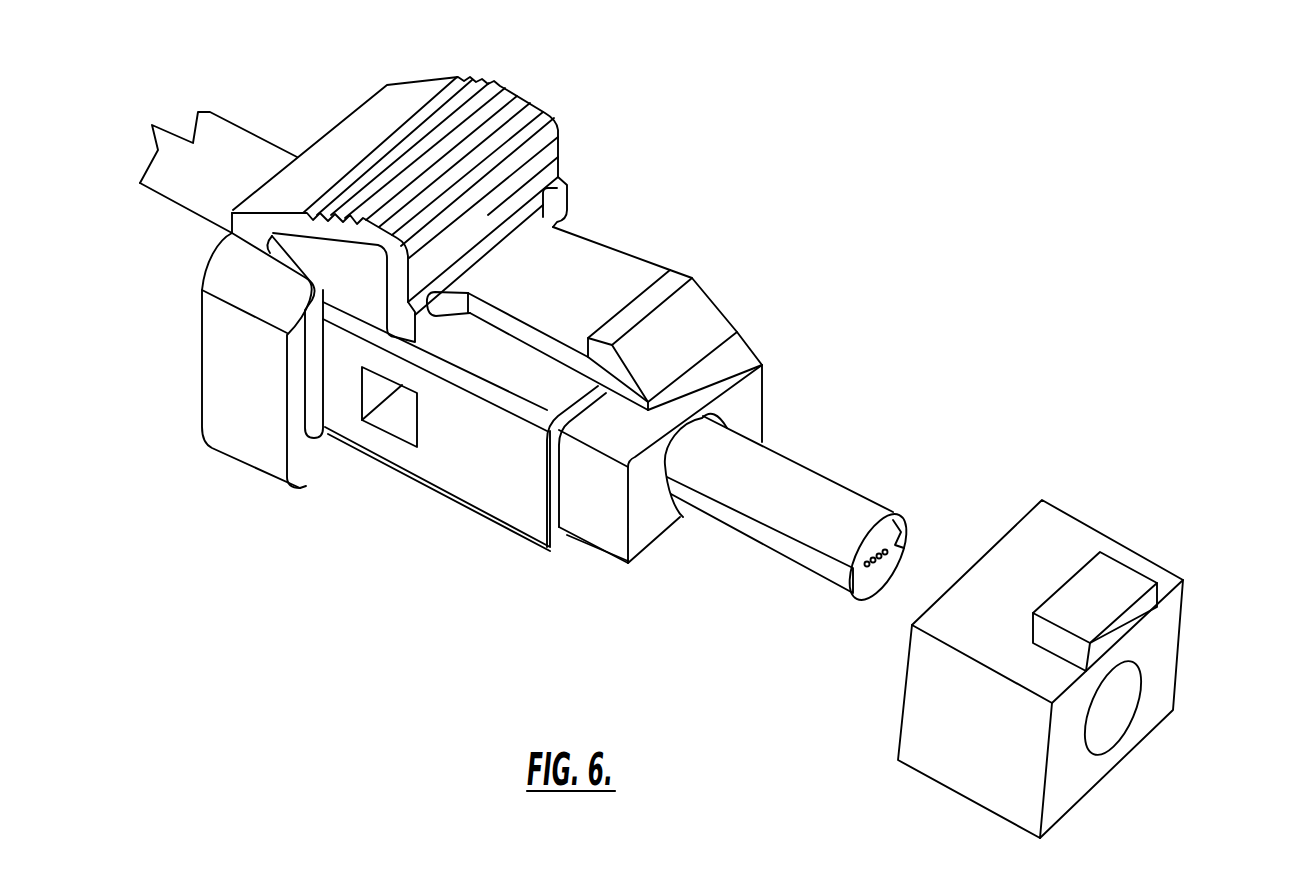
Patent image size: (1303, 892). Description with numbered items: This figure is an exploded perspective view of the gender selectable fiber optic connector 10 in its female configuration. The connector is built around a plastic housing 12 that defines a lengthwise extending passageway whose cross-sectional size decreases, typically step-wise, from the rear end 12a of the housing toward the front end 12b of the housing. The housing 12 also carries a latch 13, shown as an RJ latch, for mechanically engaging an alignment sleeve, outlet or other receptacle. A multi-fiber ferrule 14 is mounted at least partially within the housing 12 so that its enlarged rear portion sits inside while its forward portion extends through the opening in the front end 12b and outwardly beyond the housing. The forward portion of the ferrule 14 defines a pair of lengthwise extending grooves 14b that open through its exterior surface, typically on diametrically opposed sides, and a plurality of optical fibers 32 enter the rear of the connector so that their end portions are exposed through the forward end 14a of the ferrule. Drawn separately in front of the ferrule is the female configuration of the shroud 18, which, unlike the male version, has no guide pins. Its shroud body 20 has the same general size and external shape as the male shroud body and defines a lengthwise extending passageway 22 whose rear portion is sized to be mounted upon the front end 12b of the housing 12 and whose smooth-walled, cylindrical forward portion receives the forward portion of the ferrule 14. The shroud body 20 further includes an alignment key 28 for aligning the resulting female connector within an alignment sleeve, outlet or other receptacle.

The gender selectable fiber optic connector 10 is at (828, 184).
The housing 12 is at (445, 472).
The rear end of the housing 12a is at (202, 360).
The front end of the housing 12b is at (645, 530).
The latch 13 is at (675, 307).
The ferrule 14 is at (777, 487).
The forward end of the ferrule 14a is at (887, 535).
The lengthwise extending grooves 14b is at (810, 560).
The shroud 18 is at (1123, 505).
The shroud body 20 is at (1037, 527).
The lengthwise extending passageway 22 is at (1118, 705).
The alignment key 28 is at (1113, 587).
The optical fibers 32 is at (223, 147).